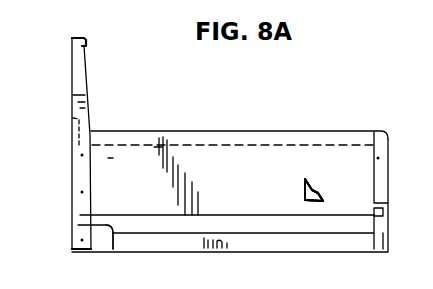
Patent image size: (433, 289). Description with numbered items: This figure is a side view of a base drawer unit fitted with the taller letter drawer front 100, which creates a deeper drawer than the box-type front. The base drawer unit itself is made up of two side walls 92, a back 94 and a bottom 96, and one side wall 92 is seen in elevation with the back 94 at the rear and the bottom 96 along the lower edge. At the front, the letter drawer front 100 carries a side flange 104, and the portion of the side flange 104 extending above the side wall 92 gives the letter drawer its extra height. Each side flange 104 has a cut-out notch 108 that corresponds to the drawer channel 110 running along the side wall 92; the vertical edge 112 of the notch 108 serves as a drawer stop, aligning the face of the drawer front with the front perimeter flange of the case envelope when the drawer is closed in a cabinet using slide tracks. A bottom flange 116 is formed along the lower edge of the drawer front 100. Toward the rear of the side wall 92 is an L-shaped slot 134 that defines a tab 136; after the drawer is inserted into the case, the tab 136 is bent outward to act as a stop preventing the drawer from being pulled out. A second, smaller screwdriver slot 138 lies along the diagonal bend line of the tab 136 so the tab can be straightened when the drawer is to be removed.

The side wall 92 is at (182, 153).
The back 94 is at (387, 156).
The bottom 96 is at (212, 251).
The letter drawer front 100 is at (72, 186).
The side flange 104 is at (82, 80).
The notch 108 is at (88, 227).
The drawer channel 110 is at (258, 226).
The vertical edge 112 is at (111, 240).
The bottom flange 116 is at (82, 245).
The L-shaped slot 134 is at (304, 183).
The tab 136 is at (322, 201).
The screwdriver slot 138 is at (322, 186).